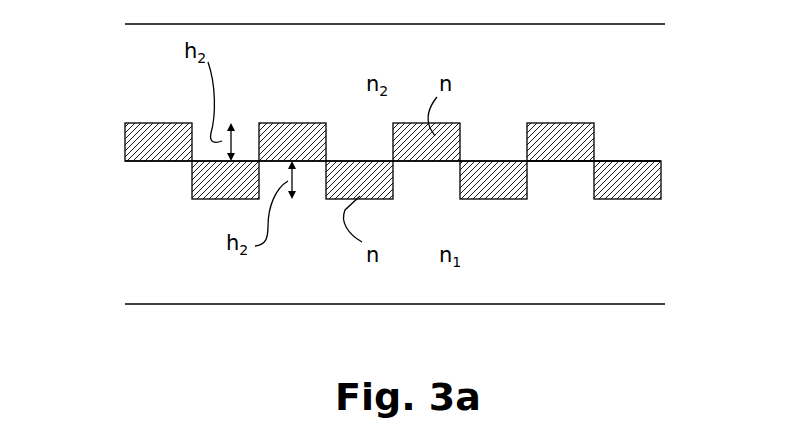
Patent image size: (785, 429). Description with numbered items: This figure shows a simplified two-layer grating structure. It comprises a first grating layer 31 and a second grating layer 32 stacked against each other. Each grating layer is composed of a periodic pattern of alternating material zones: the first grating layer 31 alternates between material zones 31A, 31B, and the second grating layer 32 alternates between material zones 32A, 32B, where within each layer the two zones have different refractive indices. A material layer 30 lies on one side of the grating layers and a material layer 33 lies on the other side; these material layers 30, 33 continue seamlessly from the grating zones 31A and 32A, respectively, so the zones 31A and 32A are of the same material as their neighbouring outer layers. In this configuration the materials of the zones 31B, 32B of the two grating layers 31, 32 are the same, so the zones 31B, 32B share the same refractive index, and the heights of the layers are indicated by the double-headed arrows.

The material layer 30 is at (104, 199).
The first grating layer 31 is at (104, 161).
The material zone 31A is at (573, 190).
The material zone 31B is at (655, 178).
The second grating layer 32 is at (104, 123).
The material zone 32A is at (627, 133).
The material zone 32B is at (567, 130).
The material layer 33 is at (104, 123).